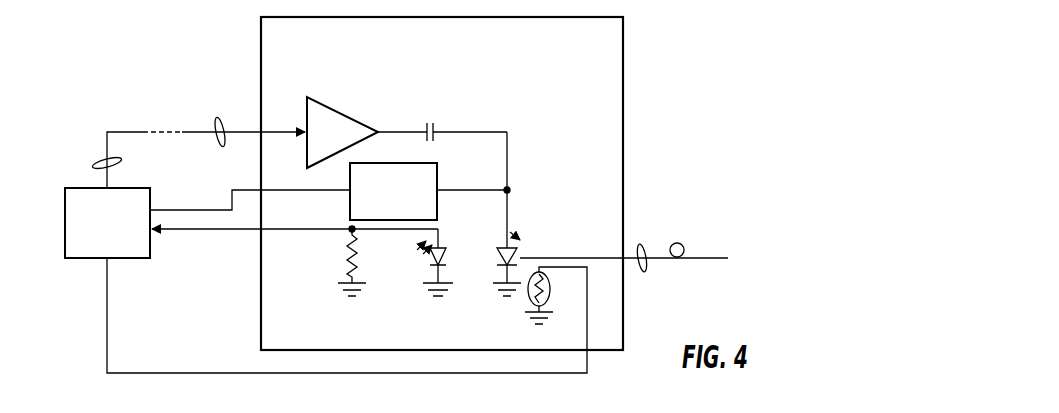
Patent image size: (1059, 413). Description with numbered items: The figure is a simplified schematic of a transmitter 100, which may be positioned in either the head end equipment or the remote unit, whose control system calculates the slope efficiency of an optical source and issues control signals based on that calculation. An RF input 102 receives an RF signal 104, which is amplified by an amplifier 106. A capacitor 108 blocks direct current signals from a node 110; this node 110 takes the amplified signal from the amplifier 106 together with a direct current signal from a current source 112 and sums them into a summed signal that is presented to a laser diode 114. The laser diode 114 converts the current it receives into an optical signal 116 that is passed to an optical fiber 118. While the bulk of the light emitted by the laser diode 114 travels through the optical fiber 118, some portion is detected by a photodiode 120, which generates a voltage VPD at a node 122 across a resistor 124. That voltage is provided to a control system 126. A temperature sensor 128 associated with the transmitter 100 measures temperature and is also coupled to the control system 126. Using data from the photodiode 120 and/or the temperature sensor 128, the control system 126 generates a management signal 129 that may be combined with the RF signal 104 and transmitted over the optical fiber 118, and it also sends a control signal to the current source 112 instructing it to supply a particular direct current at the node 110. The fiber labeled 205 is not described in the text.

The transmitter 100 is at (684, 69).
The RF input 102 is at (260, 130).
The RF signal 104 is at (214, 125).
The amplifier 106 is at (357, 120).
The capacitor 108 is at (434, 127).
The node 110 is at (509, 190).
The current source 112 is at (438, 176).
The laser diode 114 is at (518, 251).
The optical signal 116 is at (647, 247).
The optical fiber 118 is at (710, 257).
The photodiode 120 is at (417, 265).
The node 122 is at (295, 214).
The resistor 124 is at (349, 257).
The control system 126 is at (82, 259).
The temperature sensor 128 is at (520, 304).
The management signal 129 is at (103, 158).
The fiber 205 is at (682, 292).